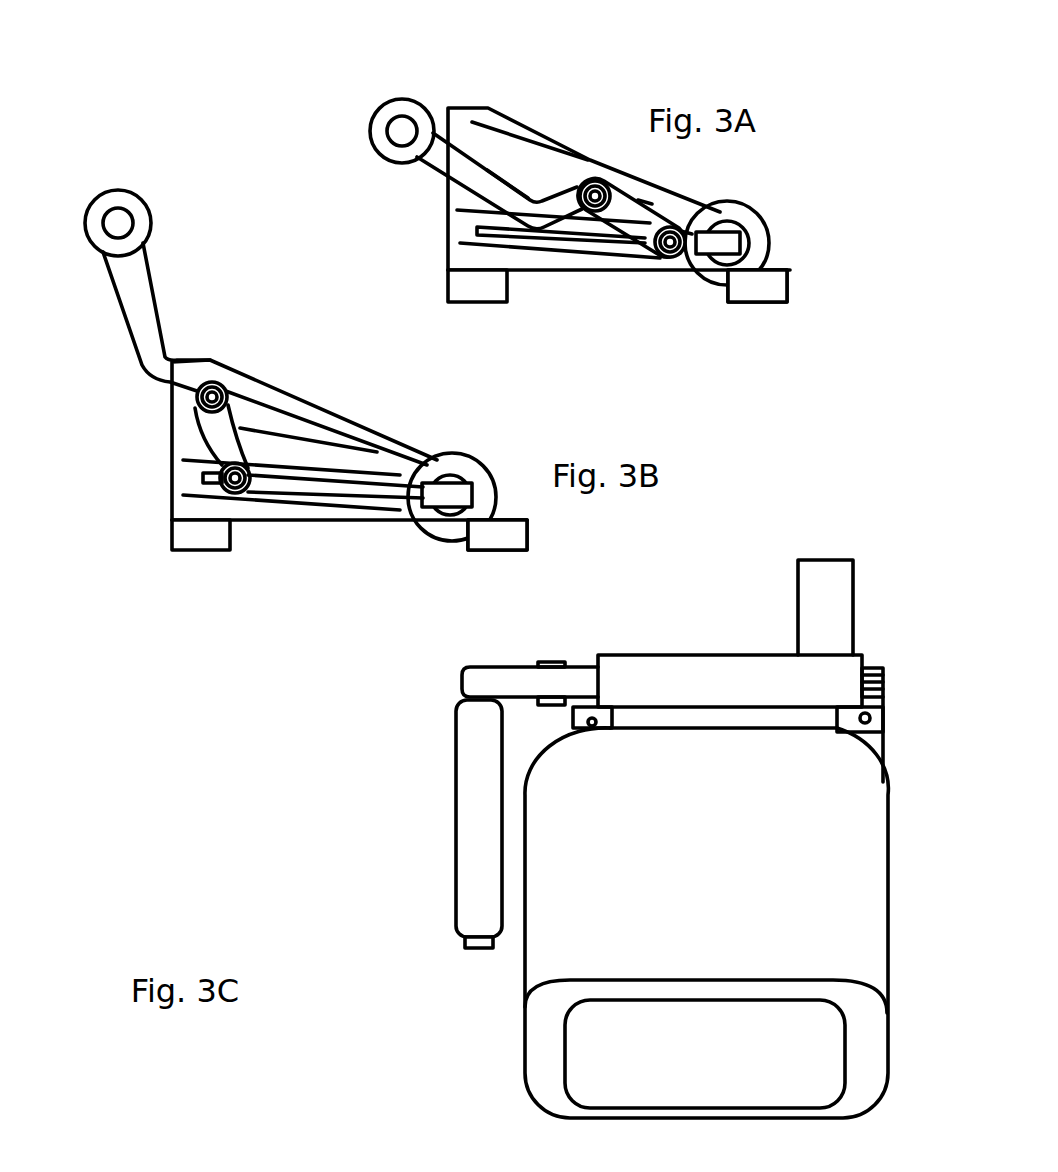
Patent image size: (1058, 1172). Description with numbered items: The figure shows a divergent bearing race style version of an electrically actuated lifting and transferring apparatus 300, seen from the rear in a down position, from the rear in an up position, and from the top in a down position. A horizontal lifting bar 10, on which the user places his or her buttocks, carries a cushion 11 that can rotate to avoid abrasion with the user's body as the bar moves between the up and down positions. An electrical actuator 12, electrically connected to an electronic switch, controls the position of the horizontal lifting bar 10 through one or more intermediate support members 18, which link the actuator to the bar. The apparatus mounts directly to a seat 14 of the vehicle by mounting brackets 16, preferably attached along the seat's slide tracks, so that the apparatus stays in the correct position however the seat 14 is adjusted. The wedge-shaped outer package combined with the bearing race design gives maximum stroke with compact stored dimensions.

In FIG. 3A, the electrically actuated lifting and transferring apparatus 300 is at (675, 40).
In FIG. 3C, the electrically actuated lifting and transferring apparatus 300 is at (262, 794).
In FIG. 3A, the horizontal lifting bar 10 is at (403, 132).
In FIG. 3B, the horizontal lifting bar 10 is at (118, 222).
In FIG. 3C, the horizontal lifting bar 10 is at (463, 948).
In FIG. 3A, the cushion 11 is at (380, 128).
In FIG. 3B, the cushion 11 is at (102, 247).
In FIG. 3C, the cushion 11 is at (482, 855).
In FIG. 3A, the electrical actuator 12 is at (742, 215).
In FIG. 3B, the electrical actuator 12 is at (465, 463).
In FIG. 3C, the electrical actuator 12 is at (835, 677).
In FIG. 3C, the seat 14 is at (580, 943).
In FIG. 3A, the mounting brackets 16 is at (477, 290).
In FIG. 3B, the mounting brackets 16 is at (200, 538).
In FIG. 3C, the mounting brackets 16 is at (587, 707).
In FIG. 3A, the intermediate support members 18 is at (473, 180).
In FIG. 3B, the intermediate support members 18 is at (165, 383).
In FIG. 3C, the intermediate support members 18 is at (480, 680).